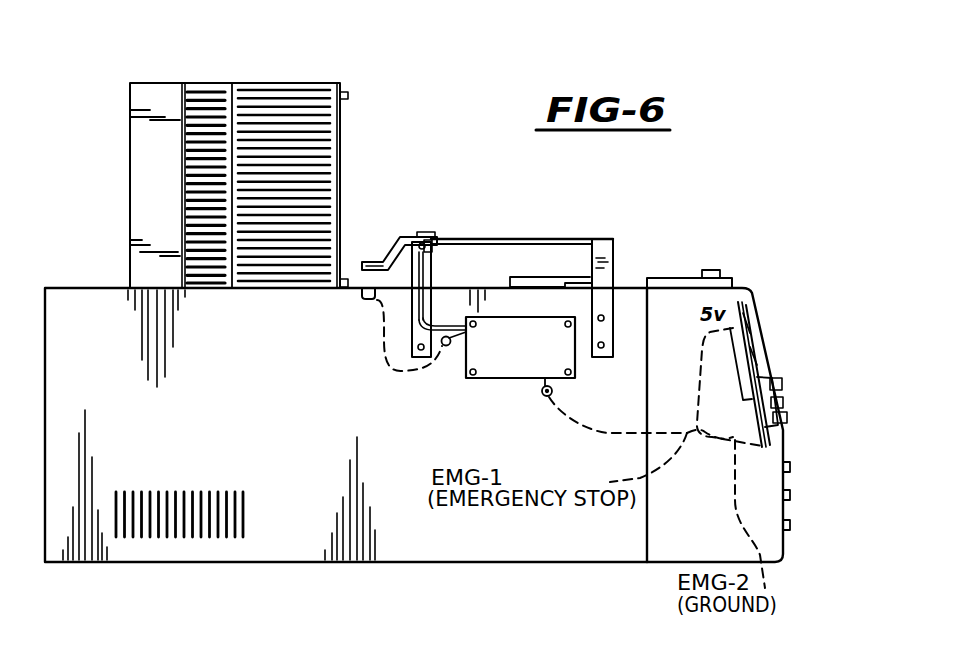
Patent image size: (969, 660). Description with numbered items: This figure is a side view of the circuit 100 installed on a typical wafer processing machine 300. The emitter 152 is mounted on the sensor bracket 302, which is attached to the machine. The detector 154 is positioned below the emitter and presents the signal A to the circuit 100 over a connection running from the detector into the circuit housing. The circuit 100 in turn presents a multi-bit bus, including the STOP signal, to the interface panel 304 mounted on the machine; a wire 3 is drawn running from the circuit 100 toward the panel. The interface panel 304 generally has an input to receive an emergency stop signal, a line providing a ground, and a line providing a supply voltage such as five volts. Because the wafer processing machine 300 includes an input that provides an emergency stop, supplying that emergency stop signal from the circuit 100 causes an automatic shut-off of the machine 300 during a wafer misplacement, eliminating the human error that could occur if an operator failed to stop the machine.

The wafer processing machine 300 is at (176, 76).
The emitter 152 is at (371, 262).
The sensor bracket 302 is at (432, 234).
The detector 154 is at (374, 300).
The circuit 100 is at (484, 381).
The interface panel 304 is at (745, 350).
The emergency stop wire 3 is at (610, 437).
The signal A is at (409, 347).